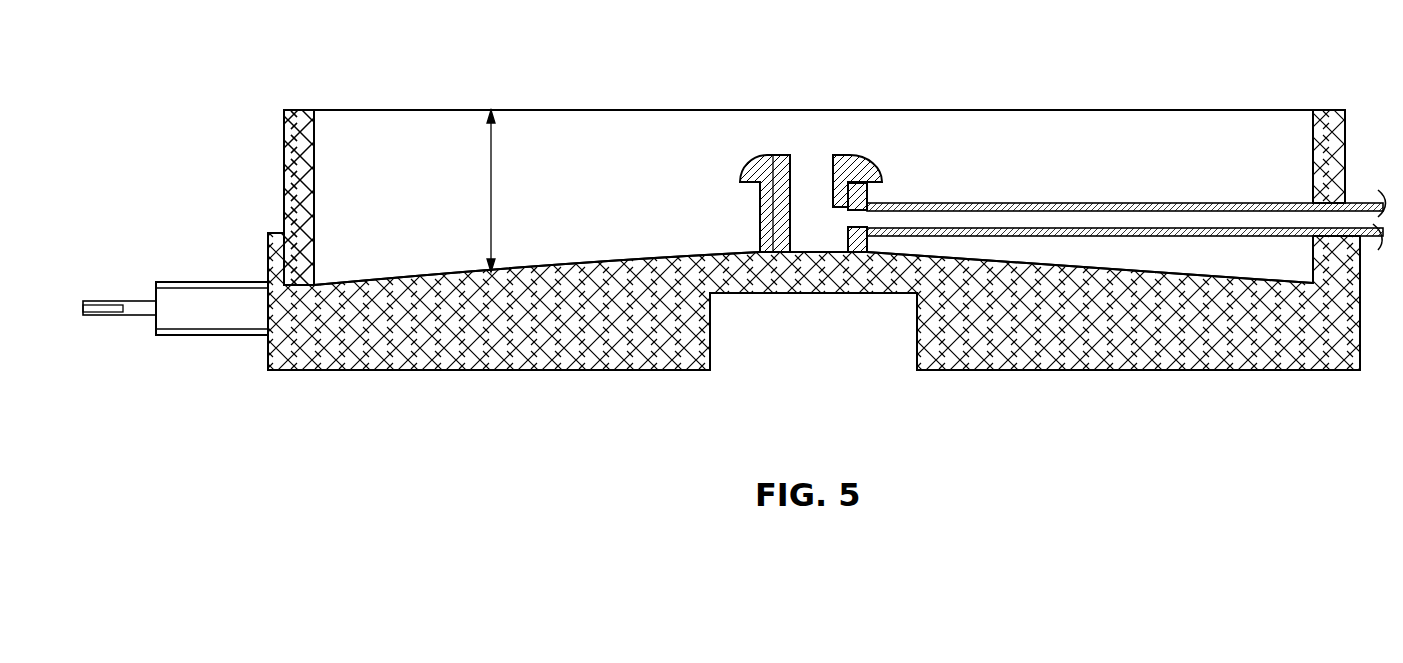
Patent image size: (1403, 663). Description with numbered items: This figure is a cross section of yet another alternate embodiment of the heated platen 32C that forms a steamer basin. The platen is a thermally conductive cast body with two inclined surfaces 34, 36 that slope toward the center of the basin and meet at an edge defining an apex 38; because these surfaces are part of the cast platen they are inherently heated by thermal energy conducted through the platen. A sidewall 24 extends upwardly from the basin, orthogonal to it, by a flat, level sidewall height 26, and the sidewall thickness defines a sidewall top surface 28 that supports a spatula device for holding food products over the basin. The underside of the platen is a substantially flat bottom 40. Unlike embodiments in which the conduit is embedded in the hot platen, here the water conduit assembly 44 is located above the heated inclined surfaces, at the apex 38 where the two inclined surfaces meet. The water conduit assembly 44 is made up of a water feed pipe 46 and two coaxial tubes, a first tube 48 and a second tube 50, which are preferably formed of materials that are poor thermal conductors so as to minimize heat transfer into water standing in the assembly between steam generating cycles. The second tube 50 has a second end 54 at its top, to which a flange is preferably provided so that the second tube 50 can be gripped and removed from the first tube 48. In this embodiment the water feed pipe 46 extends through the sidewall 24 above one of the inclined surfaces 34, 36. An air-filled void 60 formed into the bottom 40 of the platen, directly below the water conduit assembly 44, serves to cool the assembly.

The sidewall 24 is at (283, 202).
The sidewall height 26 is at (491, 165).
The sidewall top surface 28 is at (300, 110).
The platen 32C is at (1225, 70).
The first inclined surface 34 is at (433, 273).
The second inclined surface 36 is at (1163, 272).
The apex 38 is at (820, 253).
The bottom surface 40 is at (610, 370).
The water conduit assembly 44 is at (732, 148).
The water feed pipe 46 is at (1070, 203).
The first tube 48 is at (867, 192).
The second tube 50 is at (847, 153).
The second end of the second tube 54 is at (763, 157).
The air-filled void 60 is at (815, 343).